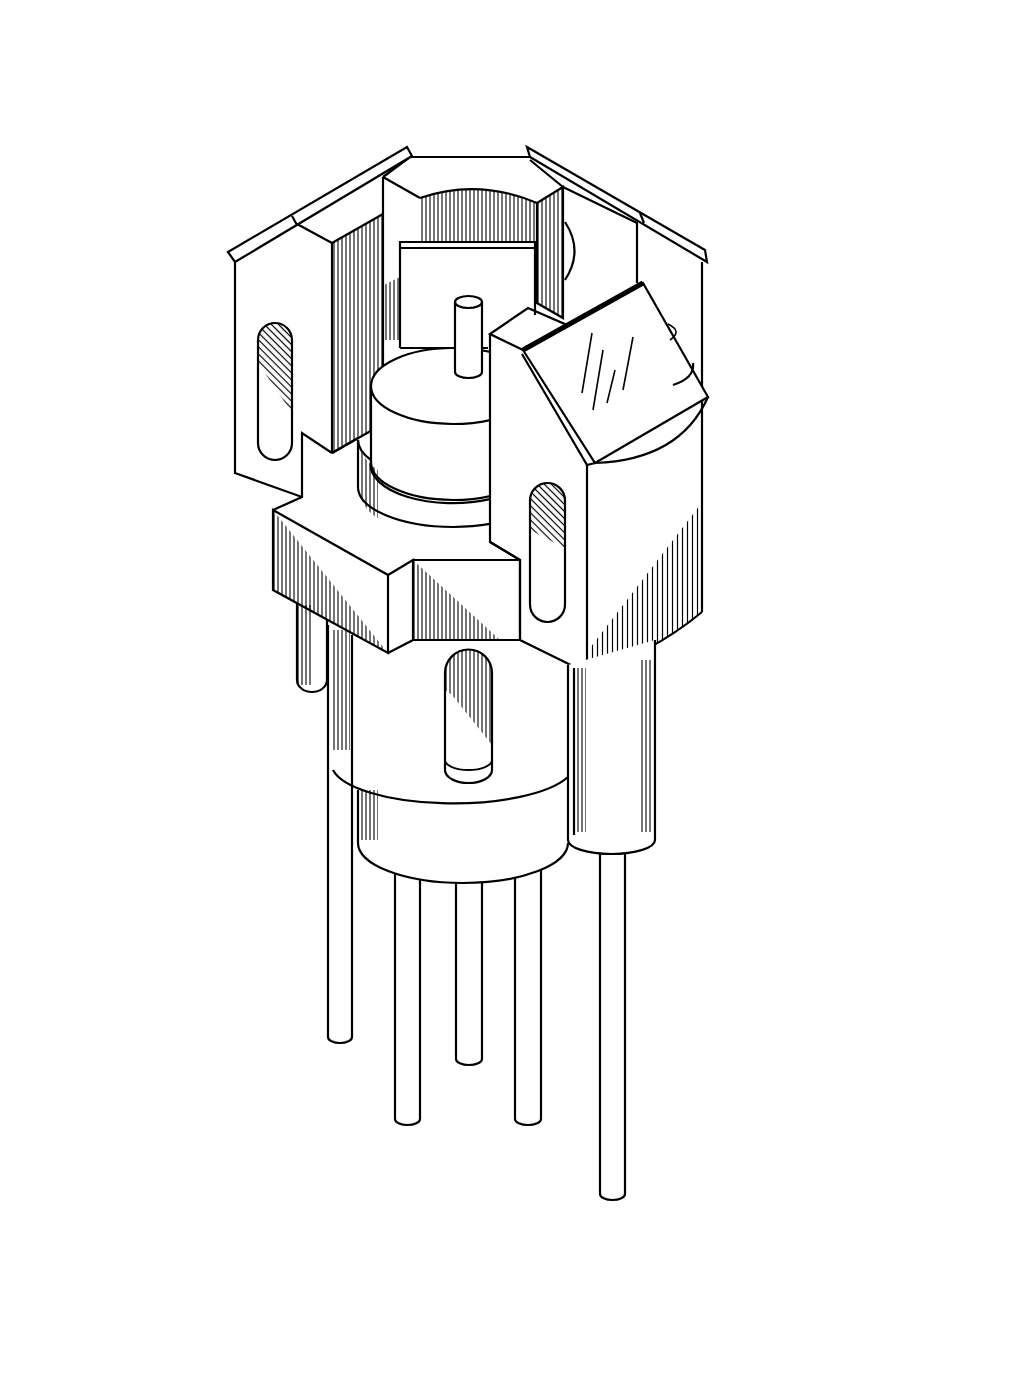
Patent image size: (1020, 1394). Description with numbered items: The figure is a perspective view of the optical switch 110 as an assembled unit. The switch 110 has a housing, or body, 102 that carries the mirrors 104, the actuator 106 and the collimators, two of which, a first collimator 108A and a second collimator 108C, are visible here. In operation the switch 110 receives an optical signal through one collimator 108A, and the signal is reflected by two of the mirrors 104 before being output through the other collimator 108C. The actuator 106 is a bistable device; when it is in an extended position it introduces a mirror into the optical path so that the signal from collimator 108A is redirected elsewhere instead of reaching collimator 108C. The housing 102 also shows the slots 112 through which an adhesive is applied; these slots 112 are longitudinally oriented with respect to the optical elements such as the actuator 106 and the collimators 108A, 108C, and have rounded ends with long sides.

The housing 102 is at (687, 463).
The mirror 104 is at (552, 157).
The actuator 106 is at (360, 736).
The collimator 108A is at (313, 648).
The collimator 108C is at (642, 735).
The optical switch 110 is at (806, 292).
The slot 112 is at (288, 366).